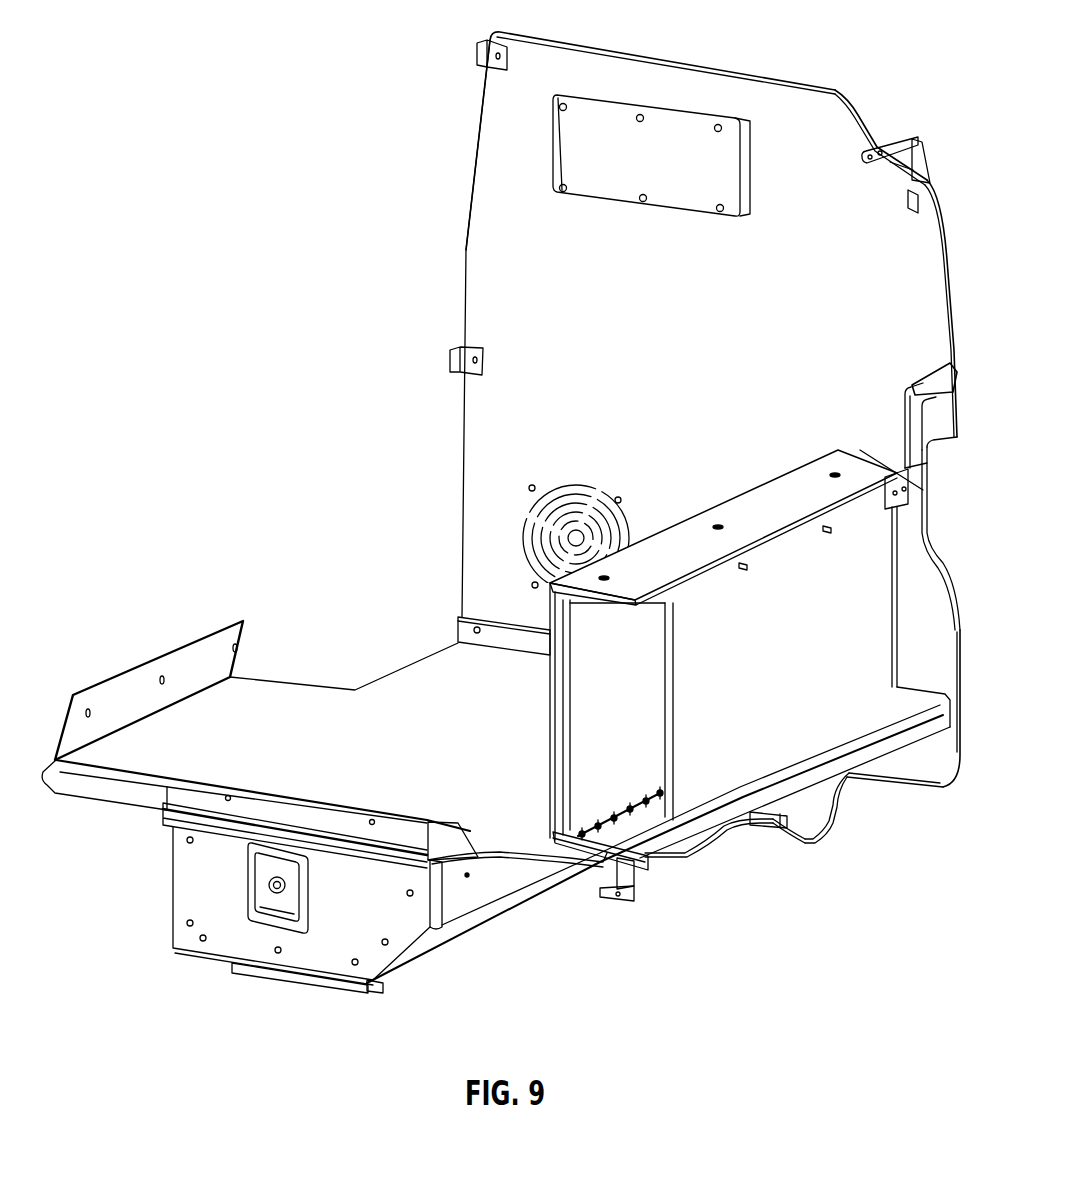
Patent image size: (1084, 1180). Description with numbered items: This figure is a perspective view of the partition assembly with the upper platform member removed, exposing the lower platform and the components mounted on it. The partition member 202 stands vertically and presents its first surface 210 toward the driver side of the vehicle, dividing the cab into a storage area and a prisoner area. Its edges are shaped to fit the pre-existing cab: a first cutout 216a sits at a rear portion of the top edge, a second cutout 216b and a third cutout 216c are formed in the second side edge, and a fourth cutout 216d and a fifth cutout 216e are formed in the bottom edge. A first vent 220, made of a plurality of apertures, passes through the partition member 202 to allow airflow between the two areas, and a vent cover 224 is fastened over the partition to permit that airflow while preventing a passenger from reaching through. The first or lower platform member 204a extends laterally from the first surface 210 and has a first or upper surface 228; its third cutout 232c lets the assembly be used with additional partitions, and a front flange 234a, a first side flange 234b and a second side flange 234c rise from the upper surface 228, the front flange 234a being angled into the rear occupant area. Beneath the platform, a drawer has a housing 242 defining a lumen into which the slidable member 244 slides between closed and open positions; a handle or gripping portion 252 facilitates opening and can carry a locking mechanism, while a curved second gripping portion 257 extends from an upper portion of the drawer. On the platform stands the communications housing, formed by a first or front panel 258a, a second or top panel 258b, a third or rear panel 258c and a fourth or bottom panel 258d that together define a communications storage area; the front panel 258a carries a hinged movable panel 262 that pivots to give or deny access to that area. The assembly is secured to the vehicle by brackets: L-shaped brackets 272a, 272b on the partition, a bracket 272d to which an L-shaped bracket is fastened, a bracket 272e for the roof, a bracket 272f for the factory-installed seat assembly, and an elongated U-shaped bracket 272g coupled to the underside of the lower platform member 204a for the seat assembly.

The partition member 202 is at (711, 467).
The first surface 210 is at (711, 467).
The first or lower platform member 204a is at (296, 682).
The first or upper surface 228 is at (296, 682).
The first cutout 216a is at (856, 134).
The second cutout 216b is at (950, 422).
The third cutout 216c is at (887, 480).
The fourth cutout 216d is at (843, 810).
The fifth cutout 216e is at (720, 847).
The first vent 220 is at (568, 514).
The vent cover 224 is at (630, 172).
The third cutout 232c is at (267, 680).
The front flange 234a is at (123, 690).
The first side flange 234b is at (487, 637).
The second side flange 234c is at (90, 783).
The housing 242 is at (487, 875).
The slidable member 244 is at (270, 949).
The handle or gripping portion 252 is at (270, 912).
The second gripping portion 257 is at (222, 823).
The first or front panel 258a is at (563, 772).
The second or top panel 258b is at (730, 513).
The third or rear panel 258c is at (727, 697).
The fourth or bottom panel 258d is at (563, 843).
The movable panel 262 is at (607, 722).
The bracket 272a is at (478, 52).
The bracket 272b is at (455, 352).
The bracket 272d is at (367, 993).
The bracket 272e is at (908, 140).
The bracket 272f is at (937, 383).
The elongated U-shaped bracket 272g is at (633, 880).